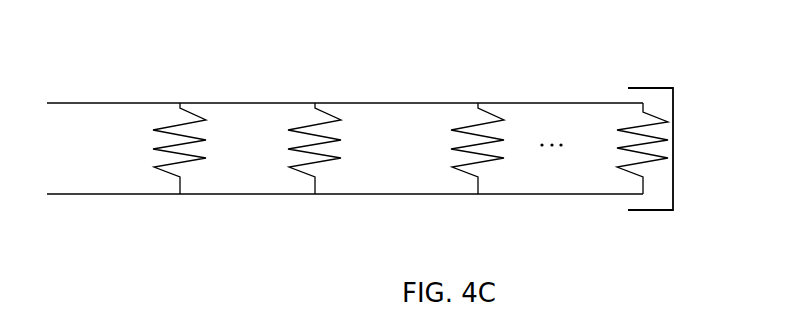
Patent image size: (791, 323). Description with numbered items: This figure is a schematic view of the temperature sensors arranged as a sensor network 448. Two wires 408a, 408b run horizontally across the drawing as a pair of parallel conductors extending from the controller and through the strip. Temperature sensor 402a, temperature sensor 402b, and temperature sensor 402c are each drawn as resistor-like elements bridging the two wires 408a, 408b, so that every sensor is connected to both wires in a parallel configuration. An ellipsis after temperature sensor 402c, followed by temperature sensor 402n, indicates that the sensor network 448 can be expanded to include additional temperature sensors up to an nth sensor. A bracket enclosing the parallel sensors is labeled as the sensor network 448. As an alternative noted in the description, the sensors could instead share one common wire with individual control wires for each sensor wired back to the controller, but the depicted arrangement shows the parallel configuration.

The wire 408a is at (63, 102).
The wire 408b is at (107, 195).
The temperature sensor 402a is at (144, 131).
The temperature sensor 402b is at (281, 160).
The temperature sensor 402c is at (442, 134).
The temperature sensor 402n is at (601, 169).
The sensor network 448 is at (673, 148).